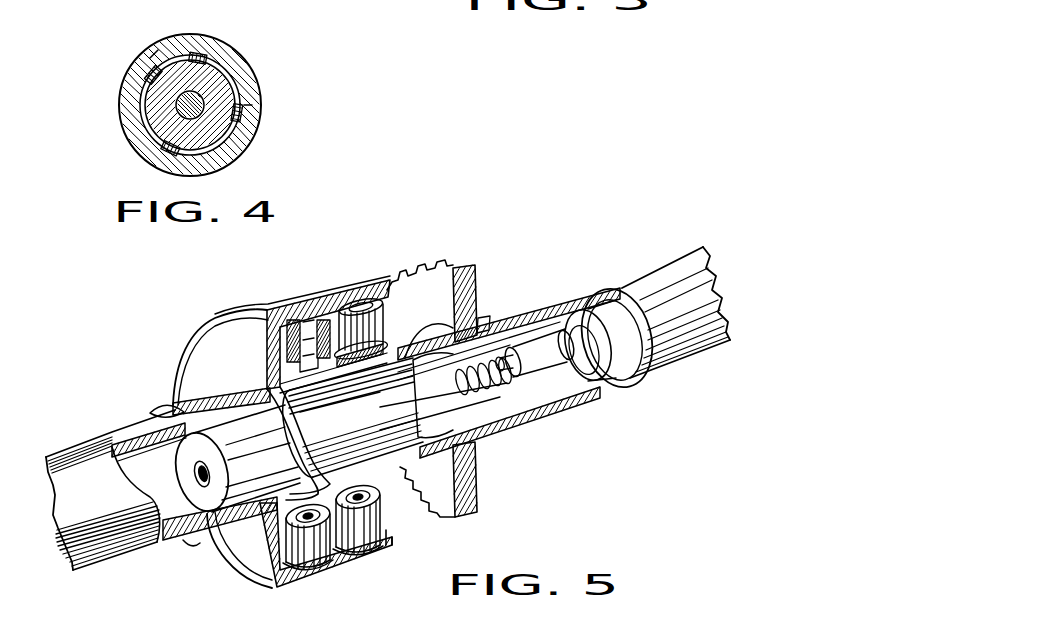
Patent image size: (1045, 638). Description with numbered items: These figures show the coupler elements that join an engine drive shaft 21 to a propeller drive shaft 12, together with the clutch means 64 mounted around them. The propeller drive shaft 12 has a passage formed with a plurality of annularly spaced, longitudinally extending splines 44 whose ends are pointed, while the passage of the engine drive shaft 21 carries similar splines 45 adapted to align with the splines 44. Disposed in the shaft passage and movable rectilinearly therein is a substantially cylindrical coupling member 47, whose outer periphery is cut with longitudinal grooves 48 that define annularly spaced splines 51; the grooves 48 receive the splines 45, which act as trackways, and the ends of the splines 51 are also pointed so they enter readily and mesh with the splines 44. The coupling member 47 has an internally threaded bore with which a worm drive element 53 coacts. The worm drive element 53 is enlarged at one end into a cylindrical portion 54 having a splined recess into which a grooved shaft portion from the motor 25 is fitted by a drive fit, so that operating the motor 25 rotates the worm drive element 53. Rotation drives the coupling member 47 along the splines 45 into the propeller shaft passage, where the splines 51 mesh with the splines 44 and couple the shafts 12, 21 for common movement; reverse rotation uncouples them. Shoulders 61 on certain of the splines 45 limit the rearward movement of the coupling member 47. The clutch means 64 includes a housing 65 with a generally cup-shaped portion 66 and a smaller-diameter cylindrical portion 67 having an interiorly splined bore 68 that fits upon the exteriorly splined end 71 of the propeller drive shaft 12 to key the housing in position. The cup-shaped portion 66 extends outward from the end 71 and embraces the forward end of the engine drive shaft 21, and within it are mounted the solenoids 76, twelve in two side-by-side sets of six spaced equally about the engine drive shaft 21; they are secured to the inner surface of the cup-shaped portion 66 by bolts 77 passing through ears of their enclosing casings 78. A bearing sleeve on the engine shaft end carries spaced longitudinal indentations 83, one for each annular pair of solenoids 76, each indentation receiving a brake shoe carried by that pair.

In FIG. 5, the propeller drive shaft 12 is at (114, 566).
In FIG. 4, the engine drive shaft 21 is at (185, 37).
In FIG. 5, the engine drive shaft 21 is at (689, 375).
In FIG. 5, the motor 25 is at (628, 382).
In FIG. 5, the splines 44 is at (150, 482).
In FIG. 4, the splines 45 is at (220, 65).
In FIG. 5, the splines 45 is at (476, 408).
In FIG. 4, the coupling member 47 is at (152, 106).
In FIG. 5, the coupling member 47 is at (203, 500).
In FIG. 4, the grooves 48 is at (157, 50).
In FIG. 4, the splines 51 is at (246, 81).
In FIG. 4, the worm drive element 53 is at (180, 99).
In FIG. 5, the worm drive element 53 is at (507, 395).
In FIG. 5, the cylindrical portion 54 is at (530, 340).
In FIG. 5, the shoulders 61 is at (486, 330).
In FIG. 5, the clutch means 64 is at (250, 304).
In FIG. 5, the housing 65 is at (233, 365).
In FIG. 5, the cup-shaped portion 66 is at (318, 292).
In FIG. 5, the cylindrical portion 67 is at (192, 543).
In FIG. 5, the interiorly splined bore 68 is at (168, 410).
In FIG. 5, the exteriorly splined end 71 is at (233, 560).
In FIG. 5, the solenoids 76 is at (389, 534).
In FIG. 5, the bolts 77 is at (312, 576).
In FIG. 5, the enclosing casings 78 is at (320, 565).
In FIG. 5, the indentations 83 is at (385, 460).